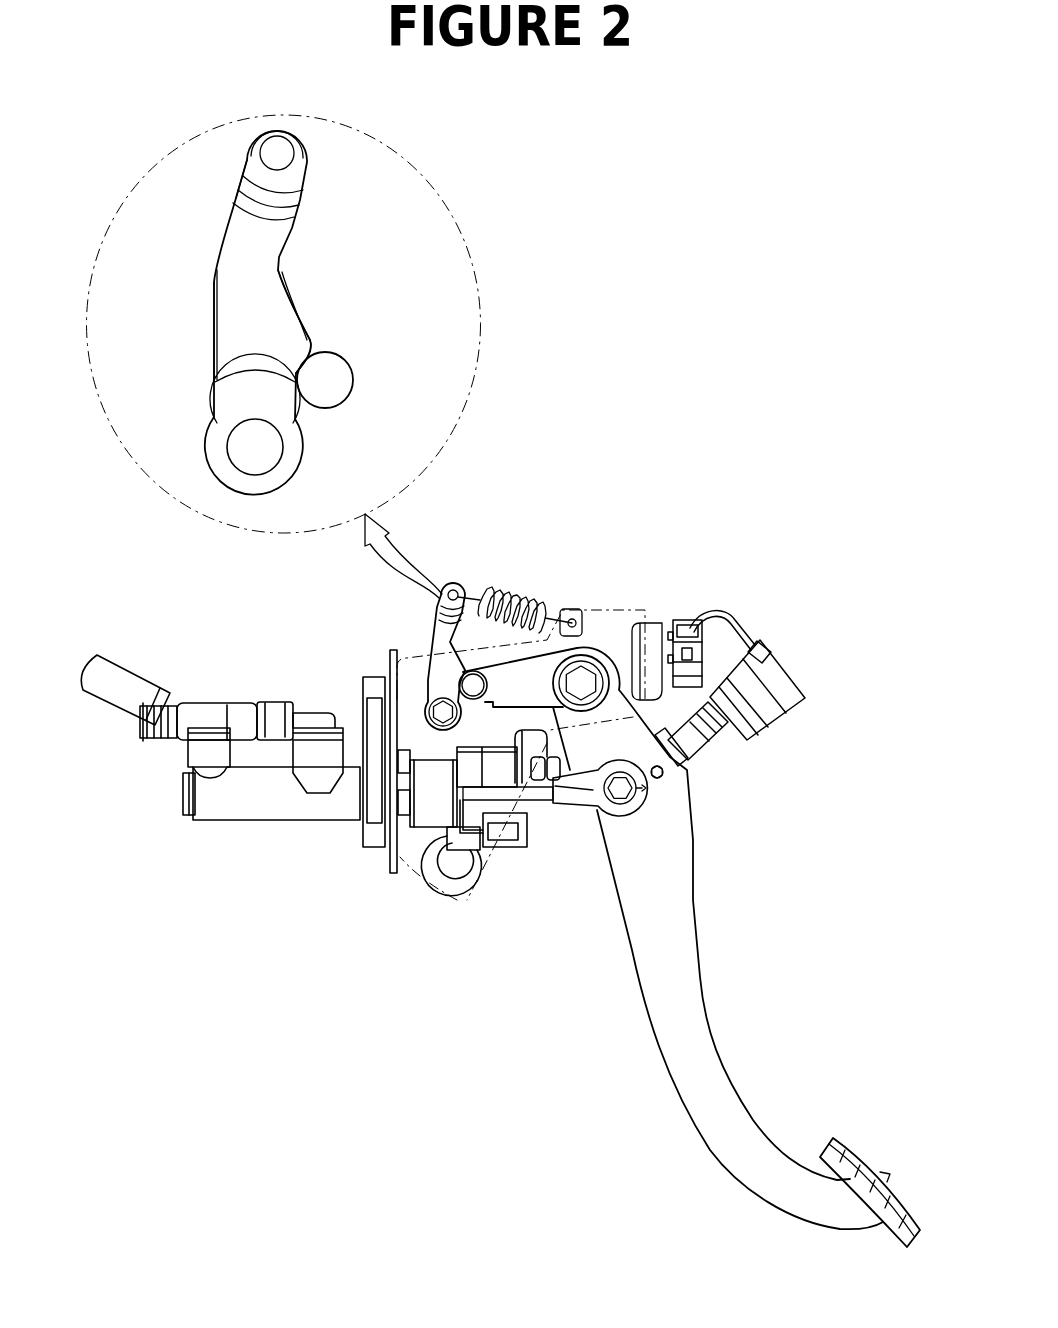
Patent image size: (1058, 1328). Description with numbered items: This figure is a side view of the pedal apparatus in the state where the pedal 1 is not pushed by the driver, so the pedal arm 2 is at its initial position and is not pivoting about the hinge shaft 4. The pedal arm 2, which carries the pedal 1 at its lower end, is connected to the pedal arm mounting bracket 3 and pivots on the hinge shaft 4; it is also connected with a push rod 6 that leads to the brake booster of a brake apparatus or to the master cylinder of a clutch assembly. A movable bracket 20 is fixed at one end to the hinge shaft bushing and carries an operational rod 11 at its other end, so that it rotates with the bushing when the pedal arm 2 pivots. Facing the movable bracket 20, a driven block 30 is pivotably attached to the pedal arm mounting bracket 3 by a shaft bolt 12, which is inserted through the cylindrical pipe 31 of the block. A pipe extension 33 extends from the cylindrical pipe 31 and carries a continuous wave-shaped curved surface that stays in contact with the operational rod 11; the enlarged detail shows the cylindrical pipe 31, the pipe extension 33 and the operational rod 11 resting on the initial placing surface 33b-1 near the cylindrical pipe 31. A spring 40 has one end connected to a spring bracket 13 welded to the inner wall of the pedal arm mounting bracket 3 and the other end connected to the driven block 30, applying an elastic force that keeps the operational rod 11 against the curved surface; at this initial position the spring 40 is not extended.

The pedal 1 is at (868, 1158).
The pedal arm 2 is at (693, 1022).
The pedal arm mounting bracket 3 is at (607, 605).
The hinge shaft 4 is at (585, 677).
The push rod 6 is at (543, 793).
The operational rod 11 is at (355, 380).
The shaft bolt 12 is at (443, 712).
The spring bracket 13 is at (573, 612).
The movable bracket 20 is at (520, 690).
The driven block 30 is at (209, 306).
The cylindrical pipe 31 is at (215, 438).
The pipe extension 33 is at (236, 242).
The initial placing surface 33b-1 is at (300, 370).
The spring 40 is at (511, 590).